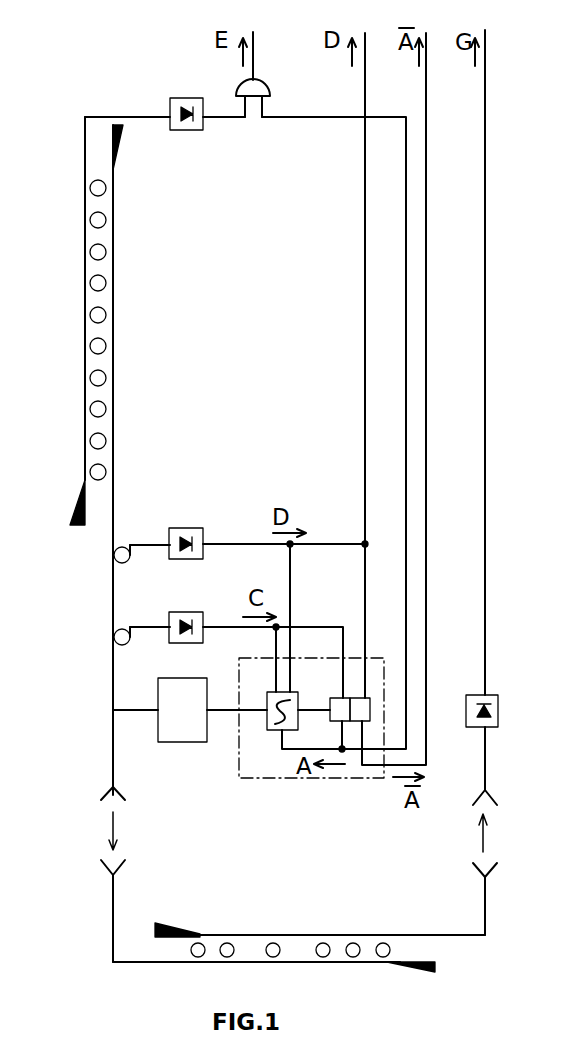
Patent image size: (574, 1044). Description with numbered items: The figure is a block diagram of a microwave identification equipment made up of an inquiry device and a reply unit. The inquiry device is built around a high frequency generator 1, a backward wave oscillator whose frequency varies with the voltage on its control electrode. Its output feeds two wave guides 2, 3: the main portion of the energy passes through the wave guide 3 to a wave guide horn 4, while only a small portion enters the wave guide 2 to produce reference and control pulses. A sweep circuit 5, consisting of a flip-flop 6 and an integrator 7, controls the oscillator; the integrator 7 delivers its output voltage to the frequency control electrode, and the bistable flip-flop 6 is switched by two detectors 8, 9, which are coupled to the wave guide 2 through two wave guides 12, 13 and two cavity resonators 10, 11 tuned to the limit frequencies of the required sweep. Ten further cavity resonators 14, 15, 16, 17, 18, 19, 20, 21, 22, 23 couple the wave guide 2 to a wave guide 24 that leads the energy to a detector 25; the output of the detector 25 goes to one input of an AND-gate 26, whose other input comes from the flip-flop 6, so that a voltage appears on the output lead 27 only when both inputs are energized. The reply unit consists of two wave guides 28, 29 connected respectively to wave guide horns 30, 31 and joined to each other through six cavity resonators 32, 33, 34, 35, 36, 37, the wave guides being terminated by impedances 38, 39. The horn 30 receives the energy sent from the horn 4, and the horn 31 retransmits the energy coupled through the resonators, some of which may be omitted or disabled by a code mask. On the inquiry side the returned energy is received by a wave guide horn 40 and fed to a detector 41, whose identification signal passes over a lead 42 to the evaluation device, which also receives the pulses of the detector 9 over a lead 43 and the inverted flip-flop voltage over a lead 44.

The high frequency generator 1 is at (178, 742).
The wave guide 2 is at (113, 697).
The wave guide 3 is at (113, 755).
The wave guide horn 4 is at (104, 797).
The sweep circuit 5 is at (256, 780).
The flip-flop 6 is at (333, 698).
The integrator 7 is at (268, 722).
The detector 8 is at (186, 612).
The detector 9 is at (186, 528).
The cavity resonator 10 is at (146, 626).
The cavity resonator 11 is at (146, 544).
The wave guide 12 is at (114, 634).
The wave guide 13 is at (114, 558).
The cavity resonator 14 is at (90, 472).
The cavity resonator 15 is at (90, 441).
The cavity resonator 16 is at (90, 409).
The cavity resonator 17 is at (90, 378).
The cavity resonator 18 is at (90, 346).
The cavity resonator 19 is at (90, 315).
The cavity resonator 20 is at (90, 283).
The cavity resonator 21 is at (90, 252).
The cavity resonator 22 is at (90, 220).
The cavity resonator 23 is at (90, 188).
The wave guide 24 is at (85, 147).
The detector 25 is at (177, 98).
The AND-gate 26 is at (242, 90).
The output lead 27 is at (256, 62).
The wave guide 28 is at (172, 963).
The wave guide 29 is at (254, 934).
The wave guide horn 30 is at (108, 872).
The wave guide horn 31 is at (478, 875).
The cavity resonator 32 is at (199, 957).
The cavity resonator 33 is at (228, 957).
The cavity resonator 34 is at (273, 957).
The cavity resonator 35 is at (323, 957).
The cavity resonator 36 is at (353, 957).
The cavity resonator 37 is at (383, 957).
The impedance 38 is at (436, 968).
The impedance 39 is at (172, 927).
The wave guide horn 40 is at (477, 790).
The detector 41 is at (466, 704).
The lead 42 is at (485, 232).
The lead 43 is at (363, 315).
The lead 44 is at (428, 316).